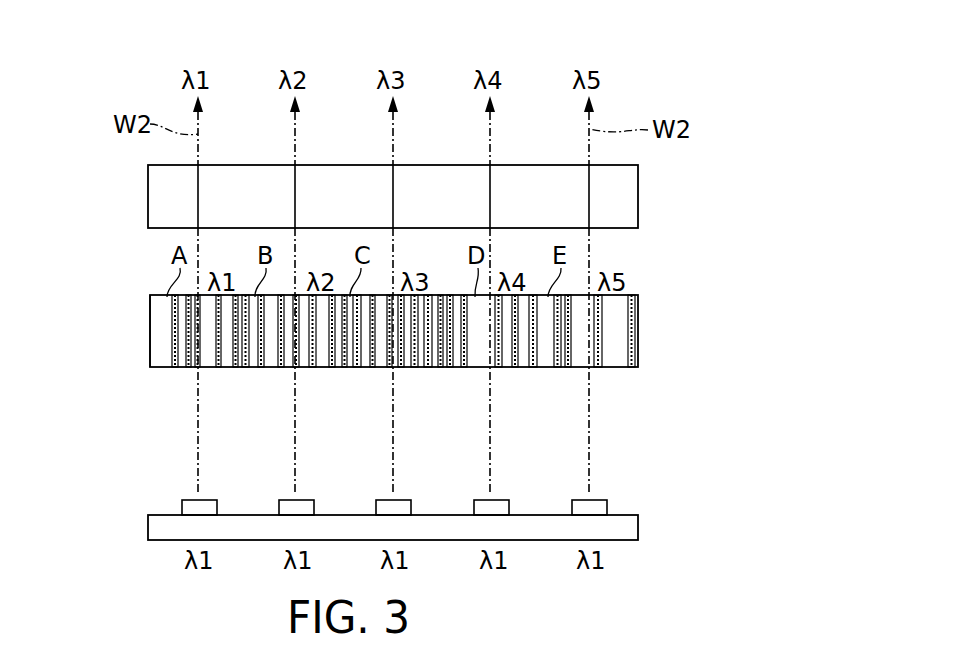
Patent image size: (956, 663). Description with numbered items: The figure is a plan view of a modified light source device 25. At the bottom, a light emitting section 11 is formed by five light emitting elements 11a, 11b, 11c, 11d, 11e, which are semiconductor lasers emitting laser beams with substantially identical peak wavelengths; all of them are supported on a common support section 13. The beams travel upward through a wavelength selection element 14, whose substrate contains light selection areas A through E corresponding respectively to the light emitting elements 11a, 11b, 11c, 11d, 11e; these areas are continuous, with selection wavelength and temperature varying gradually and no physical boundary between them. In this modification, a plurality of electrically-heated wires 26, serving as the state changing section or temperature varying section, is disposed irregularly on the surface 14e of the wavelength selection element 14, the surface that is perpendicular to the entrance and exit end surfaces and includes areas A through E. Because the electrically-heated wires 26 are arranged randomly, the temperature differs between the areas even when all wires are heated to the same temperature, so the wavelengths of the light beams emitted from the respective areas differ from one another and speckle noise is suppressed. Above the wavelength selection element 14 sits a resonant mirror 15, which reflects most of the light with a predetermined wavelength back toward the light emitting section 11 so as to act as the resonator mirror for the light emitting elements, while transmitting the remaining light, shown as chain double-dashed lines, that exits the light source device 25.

The light source device 25 is at (626, 68).
The resonant mirror 15 is at (630, 193).
The wavelength selection element 14 is at (640, 321).
The surface 14e is at (150, 323).
The electrically-heated wires 26 is at (176, 369).
The support section 13 is at (632, 527).
The light emitting section 11 is at (146, 529).
The light emitting element 11a is at (212, 510).
The light emitting element 11b is at (309, 510).
The light emitting element 11c is at (407, 510).
The light emitting element 11d is at (504, 510).
The light emitting element 11e is at (603, 510).